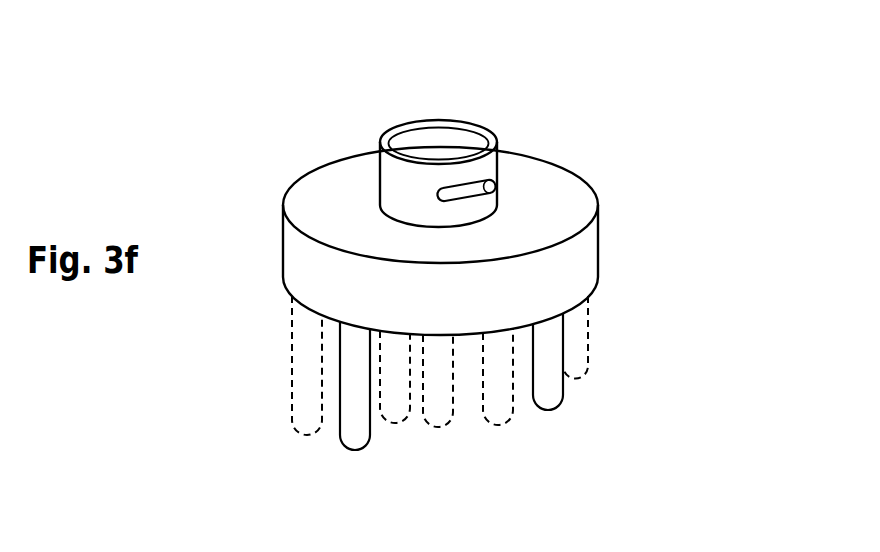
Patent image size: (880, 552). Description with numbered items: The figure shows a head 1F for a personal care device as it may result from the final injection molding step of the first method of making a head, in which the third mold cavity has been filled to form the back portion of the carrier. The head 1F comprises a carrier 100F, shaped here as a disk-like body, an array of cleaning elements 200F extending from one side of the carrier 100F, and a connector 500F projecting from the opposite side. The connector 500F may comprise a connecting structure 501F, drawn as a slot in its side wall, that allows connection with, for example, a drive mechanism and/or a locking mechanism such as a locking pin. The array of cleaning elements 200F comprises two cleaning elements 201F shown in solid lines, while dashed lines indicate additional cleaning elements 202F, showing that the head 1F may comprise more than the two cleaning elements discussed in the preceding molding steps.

The head 1F is at (512, 91).
The carrier 100F is at (567, 268).
The connector 500F is at (432, 140).
The connecting structure 501F is at (497, 184).
The array of cleaning elements 200F is at (602, 402).
The cleaning element 201F is at (355, 420).
The additional cleaning element 202F is at (297, 390).